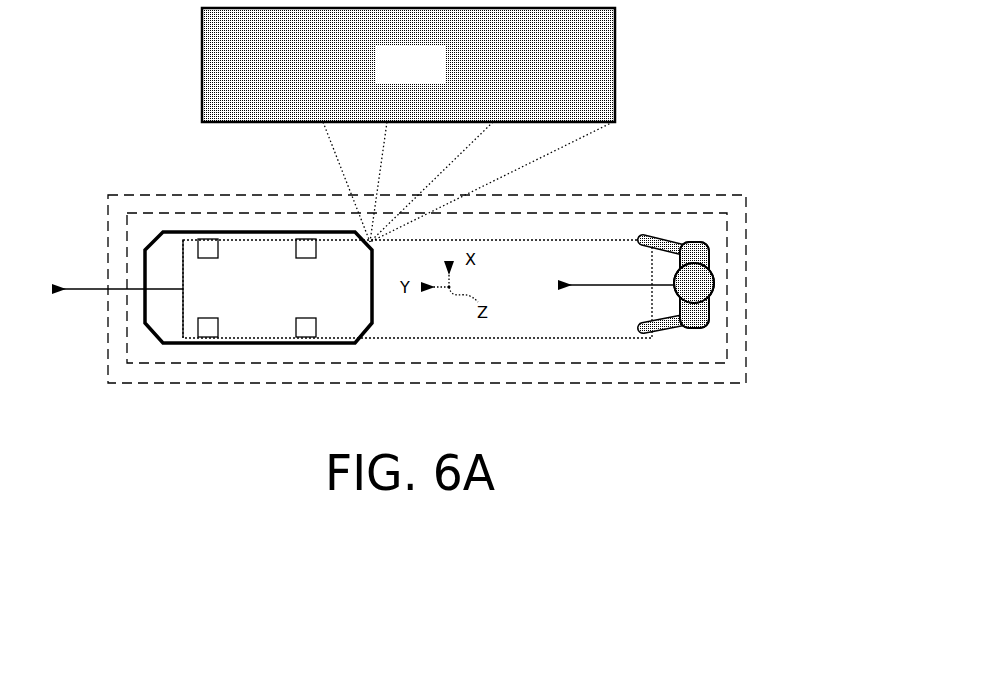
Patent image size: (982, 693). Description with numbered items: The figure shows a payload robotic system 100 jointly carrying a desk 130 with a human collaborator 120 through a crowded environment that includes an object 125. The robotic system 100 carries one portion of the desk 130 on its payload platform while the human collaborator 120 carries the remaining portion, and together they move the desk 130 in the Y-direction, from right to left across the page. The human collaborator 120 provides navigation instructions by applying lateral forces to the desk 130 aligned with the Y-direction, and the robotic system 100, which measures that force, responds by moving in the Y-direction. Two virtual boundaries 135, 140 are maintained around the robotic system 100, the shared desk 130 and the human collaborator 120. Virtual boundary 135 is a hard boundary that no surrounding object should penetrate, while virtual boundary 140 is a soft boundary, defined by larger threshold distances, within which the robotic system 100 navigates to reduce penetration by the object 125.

The robotic system 100 is at (145, 307).
The human collaborator 120 is at (708, 308).
The object 125 is at (408, 125).
The desk 130 is at (585, 338).
The virtual boundary 135 is at (648, 213).
The virtual boundary 140 is at (705, 195).